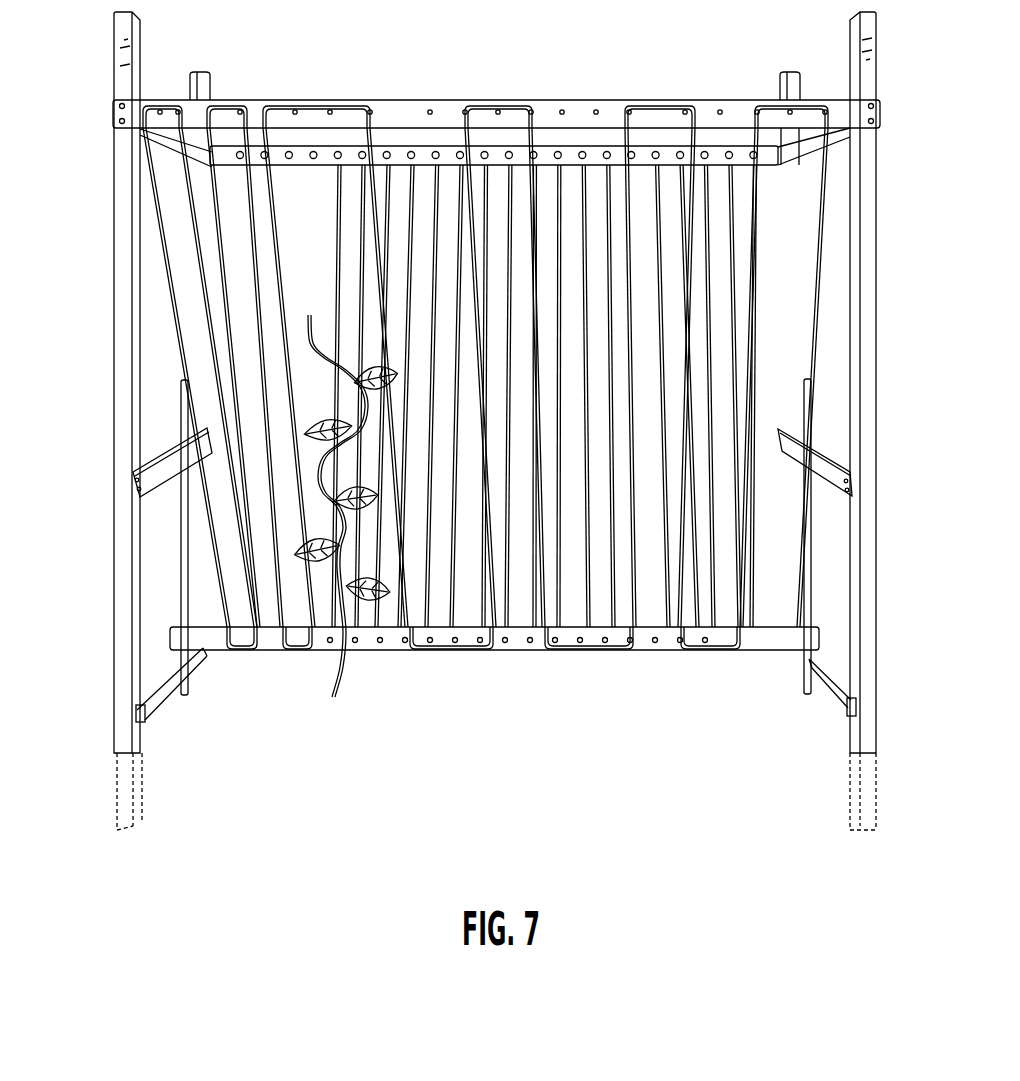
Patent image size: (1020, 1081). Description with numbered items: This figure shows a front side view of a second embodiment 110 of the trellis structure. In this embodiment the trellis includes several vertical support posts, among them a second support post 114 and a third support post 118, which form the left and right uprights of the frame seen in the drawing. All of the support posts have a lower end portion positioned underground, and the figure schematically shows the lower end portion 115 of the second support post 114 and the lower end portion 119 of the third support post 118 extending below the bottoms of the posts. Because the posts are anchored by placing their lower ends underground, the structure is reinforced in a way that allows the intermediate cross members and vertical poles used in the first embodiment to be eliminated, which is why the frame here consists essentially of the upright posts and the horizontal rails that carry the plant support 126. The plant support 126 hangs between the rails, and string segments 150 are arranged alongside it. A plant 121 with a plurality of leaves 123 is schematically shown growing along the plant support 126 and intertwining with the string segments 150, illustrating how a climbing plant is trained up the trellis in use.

The second embodiment 110 is at (486, 423).
The second support post 114 is at (108, 417).
The lower end portion of second support post 115 is at (125, 790).
The third support post 118 is at (862, 420).
The lower end portion of third support post 119 is at (860, 780).
The plant 121 is at (228, 454).
The leaves 123 is at (318, 414).
The plant support 126 is at (386, 219).
The string segments 150 is at (250, 222).